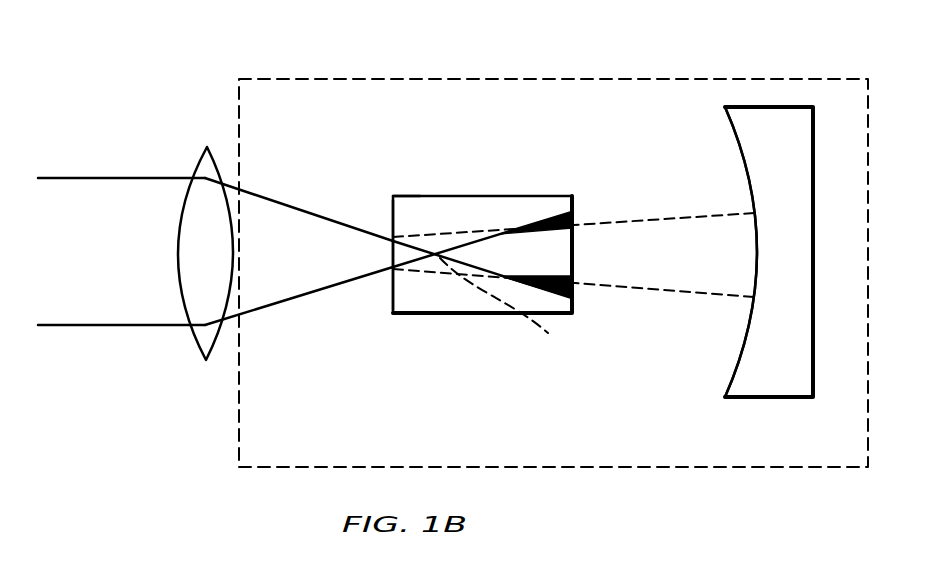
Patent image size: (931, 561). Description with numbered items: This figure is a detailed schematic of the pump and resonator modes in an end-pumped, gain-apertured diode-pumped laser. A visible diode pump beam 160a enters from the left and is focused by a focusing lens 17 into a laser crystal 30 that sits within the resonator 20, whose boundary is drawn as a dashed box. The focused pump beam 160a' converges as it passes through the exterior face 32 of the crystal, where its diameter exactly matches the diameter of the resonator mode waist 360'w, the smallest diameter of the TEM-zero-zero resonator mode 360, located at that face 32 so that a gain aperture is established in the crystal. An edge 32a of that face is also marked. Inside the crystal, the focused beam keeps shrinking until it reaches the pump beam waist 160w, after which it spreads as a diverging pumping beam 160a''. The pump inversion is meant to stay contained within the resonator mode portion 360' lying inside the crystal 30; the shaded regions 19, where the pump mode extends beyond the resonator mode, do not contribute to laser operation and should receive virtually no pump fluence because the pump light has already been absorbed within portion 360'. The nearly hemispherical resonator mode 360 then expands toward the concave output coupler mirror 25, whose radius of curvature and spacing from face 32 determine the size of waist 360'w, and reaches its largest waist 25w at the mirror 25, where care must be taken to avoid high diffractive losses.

The focusing lens 17 is at (207, 147).
The resonator 20 is at (503, 79).
The pump beam 160a is at (121, 296).
The focused pump beam 160a' is at (299, 228).
The diverging pumping beam 160a'' is at (490, 224).
The laser crystal 30 is at (470, 196).
The exterior face 32 is at (393, 218).
The entrance face edge 32a is at (393, 200).
The shaded regions 19 is at (575, 218).
The concave mirror 25 is at (815, 203).
The largest waist 25w is at (757, 232).
The resonator mode 360 is at (574, 339).
The resonator mode portion 360' is at (509, 312).
The resonator mode waist 360'w is at (382, 332).
The pump beam waist 160w is at (438, 257).